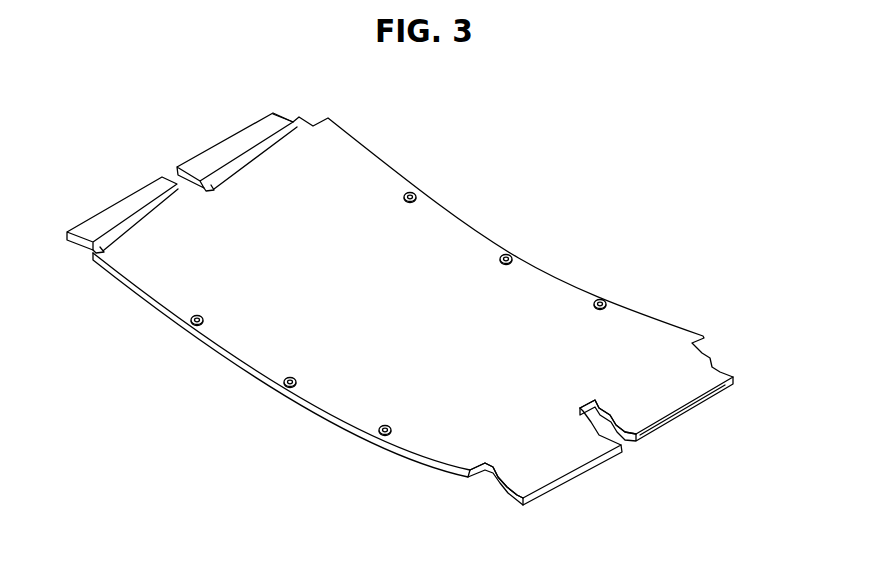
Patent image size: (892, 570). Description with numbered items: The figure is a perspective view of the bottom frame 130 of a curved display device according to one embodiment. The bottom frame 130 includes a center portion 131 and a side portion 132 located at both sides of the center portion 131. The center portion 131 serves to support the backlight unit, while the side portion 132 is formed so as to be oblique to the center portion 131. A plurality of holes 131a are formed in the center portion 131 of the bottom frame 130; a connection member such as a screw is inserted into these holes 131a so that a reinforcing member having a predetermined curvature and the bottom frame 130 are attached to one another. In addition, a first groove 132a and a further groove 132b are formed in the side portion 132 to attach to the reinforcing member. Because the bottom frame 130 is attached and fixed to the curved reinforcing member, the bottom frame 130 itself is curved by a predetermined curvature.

The bottom frame 130 is at (491, 78).
The center portion 131 is at (411, 283).
The holes 131a is at (601, 300).
The side portion 132 is at (665, 398).
The first groove 132a is at (633, 441).
The first groove 132b is at (483, 483).